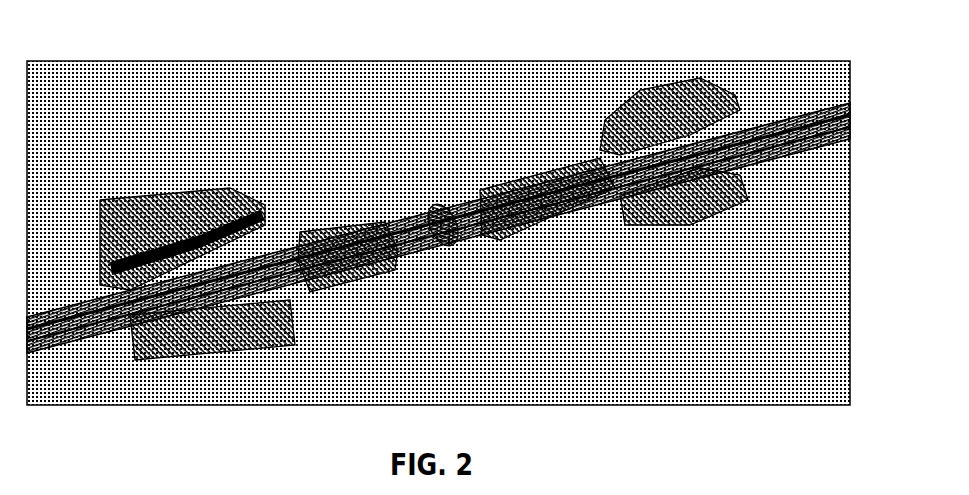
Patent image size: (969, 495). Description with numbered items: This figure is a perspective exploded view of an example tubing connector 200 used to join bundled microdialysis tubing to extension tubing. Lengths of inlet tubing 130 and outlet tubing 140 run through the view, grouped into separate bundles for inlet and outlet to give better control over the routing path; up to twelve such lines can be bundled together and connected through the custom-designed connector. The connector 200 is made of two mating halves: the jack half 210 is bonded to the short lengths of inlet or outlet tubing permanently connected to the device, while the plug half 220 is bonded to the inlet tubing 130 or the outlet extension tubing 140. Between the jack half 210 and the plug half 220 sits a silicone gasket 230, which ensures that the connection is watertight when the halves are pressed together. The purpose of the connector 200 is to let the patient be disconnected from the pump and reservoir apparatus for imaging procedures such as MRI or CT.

The tubing connector 200 is at (438, 216).
The inlet tubing 130 is at (60, 382).
The outlet tubing 140 is at (78, 382).
The jack half 210 is at (296, 274).
The plug half 220 is at (614, 185).
The silicone gasket 230 is at (502, 254).